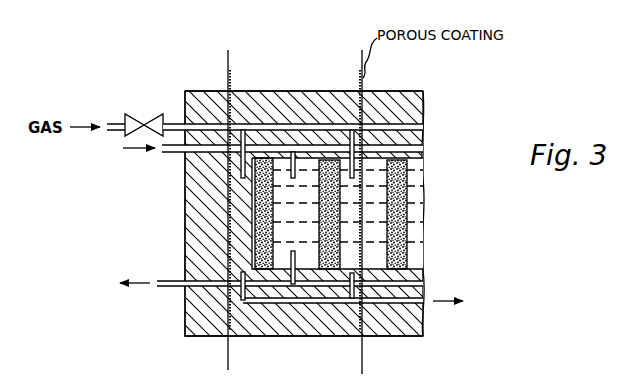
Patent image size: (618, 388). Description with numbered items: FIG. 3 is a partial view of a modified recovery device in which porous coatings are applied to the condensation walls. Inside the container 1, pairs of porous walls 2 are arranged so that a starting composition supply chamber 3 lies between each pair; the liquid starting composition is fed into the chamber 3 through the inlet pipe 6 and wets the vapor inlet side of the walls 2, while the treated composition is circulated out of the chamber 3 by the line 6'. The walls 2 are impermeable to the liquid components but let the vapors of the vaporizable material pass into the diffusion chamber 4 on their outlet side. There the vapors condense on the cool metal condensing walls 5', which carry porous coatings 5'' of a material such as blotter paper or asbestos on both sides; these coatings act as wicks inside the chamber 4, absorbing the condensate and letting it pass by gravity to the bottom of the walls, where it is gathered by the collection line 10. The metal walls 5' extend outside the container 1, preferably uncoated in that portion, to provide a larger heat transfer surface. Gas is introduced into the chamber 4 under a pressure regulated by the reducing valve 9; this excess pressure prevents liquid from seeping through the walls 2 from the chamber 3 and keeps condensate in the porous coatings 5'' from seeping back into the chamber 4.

The container 1 is at (400, 93).
The porous walls 2 is at (258, 290).
The starting composition supply chamber 3 is at (300, 290).
The diffusion chamber 4 is at (240, 257).
The metal condensing walls 5' is at (295, 206).
The porous coatings 5'' is at (295, 200).
The inlet pipe 6 is at (273, 167).
The line 6' is at (271, 300).
The reducing valve 9 is at (153, 115).
The collection line 10 is at (398, 320).